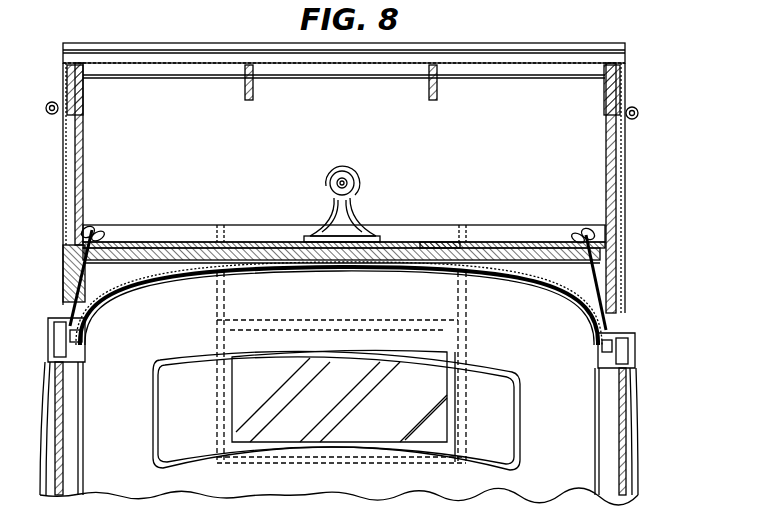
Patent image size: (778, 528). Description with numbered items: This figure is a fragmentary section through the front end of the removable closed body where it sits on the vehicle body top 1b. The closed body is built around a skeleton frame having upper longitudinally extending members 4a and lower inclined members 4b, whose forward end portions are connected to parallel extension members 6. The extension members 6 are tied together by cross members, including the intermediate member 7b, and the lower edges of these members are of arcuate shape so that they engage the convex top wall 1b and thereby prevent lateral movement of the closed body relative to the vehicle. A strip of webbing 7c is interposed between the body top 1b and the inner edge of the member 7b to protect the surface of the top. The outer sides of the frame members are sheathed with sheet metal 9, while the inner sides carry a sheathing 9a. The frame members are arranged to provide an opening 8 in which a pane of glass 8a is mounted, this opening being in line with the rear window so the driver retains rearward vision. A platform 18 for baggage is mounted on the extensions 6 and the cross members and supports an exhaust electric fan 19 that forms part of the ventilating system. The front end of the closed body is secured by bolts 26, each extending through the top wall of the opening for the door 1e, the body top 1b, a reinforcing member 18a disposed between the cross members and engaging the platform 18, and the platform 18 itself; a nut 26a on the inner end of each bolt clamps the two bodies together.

The vehicle body top 1b is at (50, 320).
The door 1e is at (84, 404).
The upper longitudinally extending member 4a is at (66, 90).
The lower inclined member 4b is at (63, 118).
The extension member 6 is at (70, 290).
The intermediate cross member 7b is at (188, 272).
The strip of webbing 7c is at (166, 240).
The opening 8 is at (350, 326).
The pane of glass 8a is at (438, 432).
The sheet metal sheathing 9 is at (626, 176).
The inner sheathing 9a is at (606, 175).
The platform 18 is at (405, 243).
The reinforcing member 18a is at (432, 245).
The exhaust electric fan 19 is at (360, 188).
The bolt 26 is at (80, 272).
The nut 26a is at (110, 219).